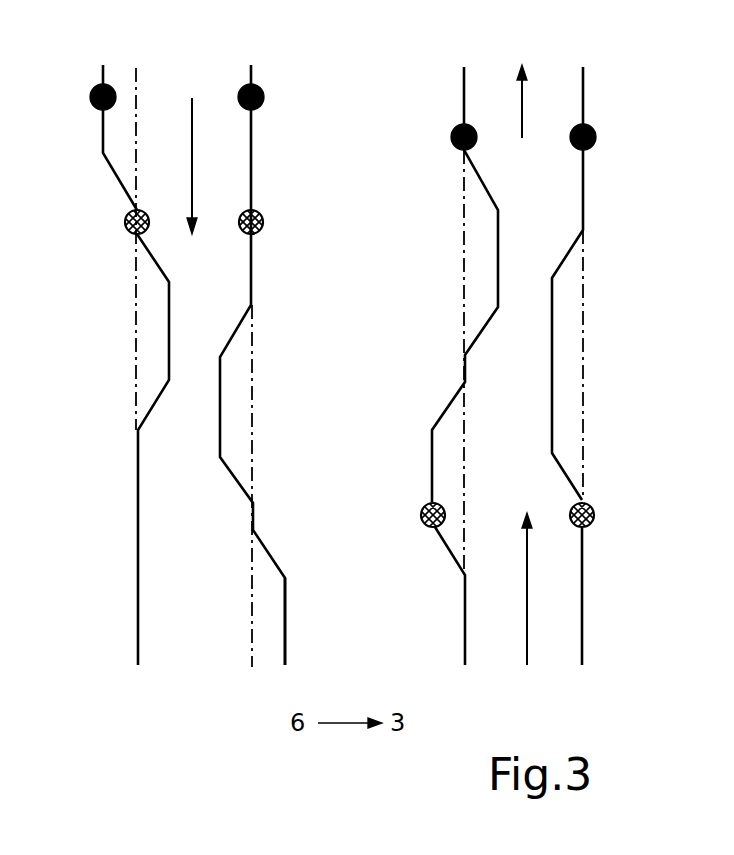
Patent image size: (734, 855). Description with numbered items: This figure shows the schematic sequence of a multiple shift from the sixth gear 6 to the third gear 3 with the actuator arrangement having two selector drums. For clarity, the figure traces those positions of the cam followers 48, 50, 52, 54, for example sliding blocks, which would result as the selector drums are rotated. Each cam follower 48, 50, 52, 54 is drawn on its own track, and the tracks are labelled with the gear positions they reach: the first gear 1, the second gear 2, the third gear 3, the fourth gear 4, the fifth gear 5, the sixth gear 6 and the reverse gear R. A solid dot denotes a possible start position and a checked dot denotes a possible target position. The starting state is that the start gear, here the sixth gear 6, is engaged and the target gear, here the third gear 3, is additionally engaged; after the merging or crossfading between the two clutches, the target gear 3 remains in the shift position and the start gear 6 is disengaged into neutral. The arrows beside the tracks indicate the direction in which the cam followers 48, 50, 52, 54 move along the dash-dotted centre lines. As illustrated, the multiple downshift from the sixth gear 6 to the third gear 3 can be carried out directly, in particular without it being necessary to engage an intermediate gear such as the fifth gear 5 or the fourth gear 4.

The cam follower 48 is at (90, 94).
The cam follower 50 is at (262, 90).
The cam follower 52 is at (450, 137).
The cam follower 54 is at (596, 128).
The gear position one 1 is at (240, 365).
The gear position two 2 is at (162, 449).
The gear position three 3 is at (434, 563).
The gear position four 4 is at (560, 366).
The gear position five 5 is at (474, 284).
The gear position six 6 is at (117, 150).
The reverse gear position R is at (296, 621).